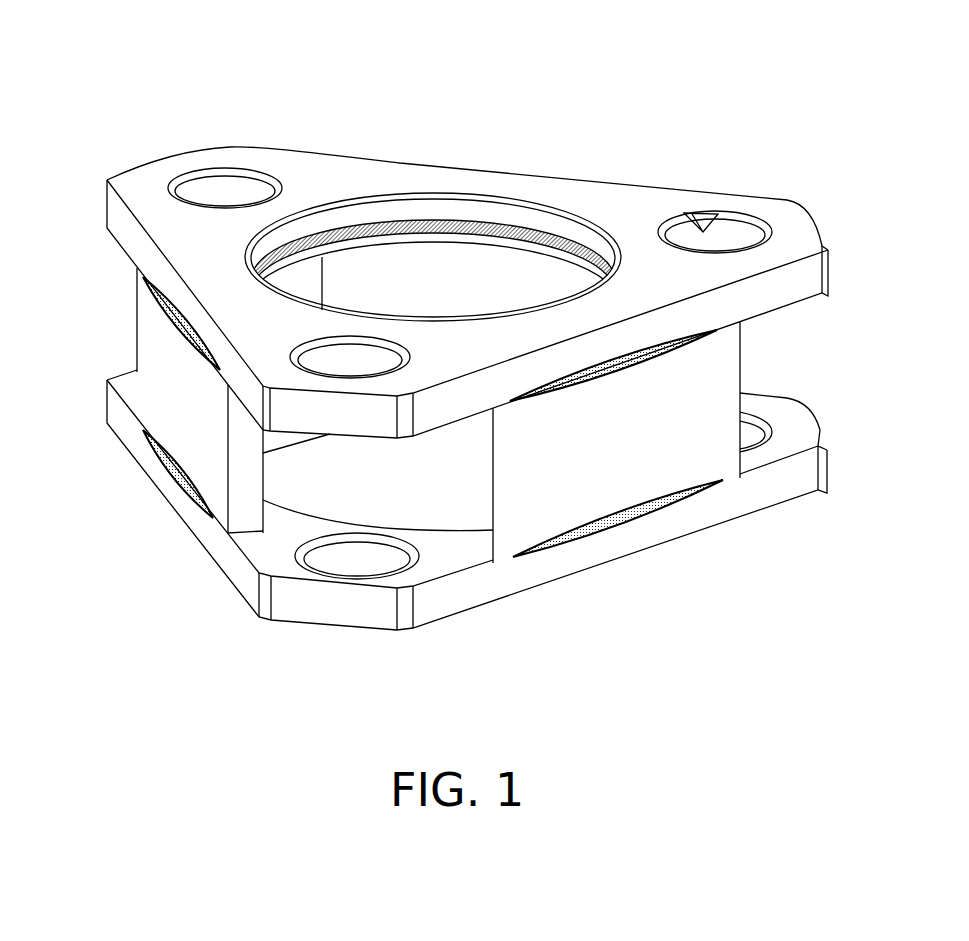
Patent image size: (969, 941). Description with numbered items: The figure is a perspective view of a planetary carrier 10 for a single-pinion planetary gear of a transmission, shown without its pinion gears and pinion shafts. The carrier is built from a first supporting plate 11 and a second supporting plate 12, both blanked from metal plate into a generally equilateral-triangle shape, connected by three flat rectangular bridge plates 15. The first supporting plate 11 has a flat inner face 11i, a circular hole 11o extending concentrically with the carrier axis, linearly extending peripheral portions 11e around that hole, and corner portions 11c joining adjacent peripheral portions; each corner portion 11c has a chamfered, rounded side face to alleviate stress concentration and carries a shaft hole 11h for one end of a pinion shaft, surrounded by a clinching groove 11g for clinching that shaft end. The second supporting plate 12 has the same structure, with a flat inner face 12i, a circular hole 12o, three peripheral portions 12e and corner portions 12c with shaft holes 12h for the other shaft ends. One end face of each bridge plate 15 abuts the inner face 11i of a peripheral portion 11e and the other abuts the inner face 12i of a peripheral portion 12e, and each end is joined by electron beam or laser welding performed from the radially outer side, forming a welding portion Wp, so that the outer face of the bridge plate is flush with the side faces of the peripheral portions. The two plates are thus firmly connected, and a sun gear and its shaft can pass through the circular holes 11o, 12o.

The planetary carrier 10 is at (331, 140).
The first supporting plate 11 is at (831, 268).
The corner portion 11c is at (147, 187).
The peripheral portion 11e is at (217, 263).
The clinching groove 11g is at (698, 217).
The shaft hole 11h is at (352, 362).
The inner face 11i is at (117, 242).
The circular hole 11o is at (408, 289).
The second supporting plate 12 is at (173, 493).
The corner portion 12c is at (792, 422).
The peripheral portion 12e is at (200, 520).
The shaft hole 12h is at (360, 557).
The inner face 12i is at (252, 548).
The circular hole 12o is at (442, 486).
The bridge plate 15 is at (430, 277).
The welding portion Wp is at (187, 330).